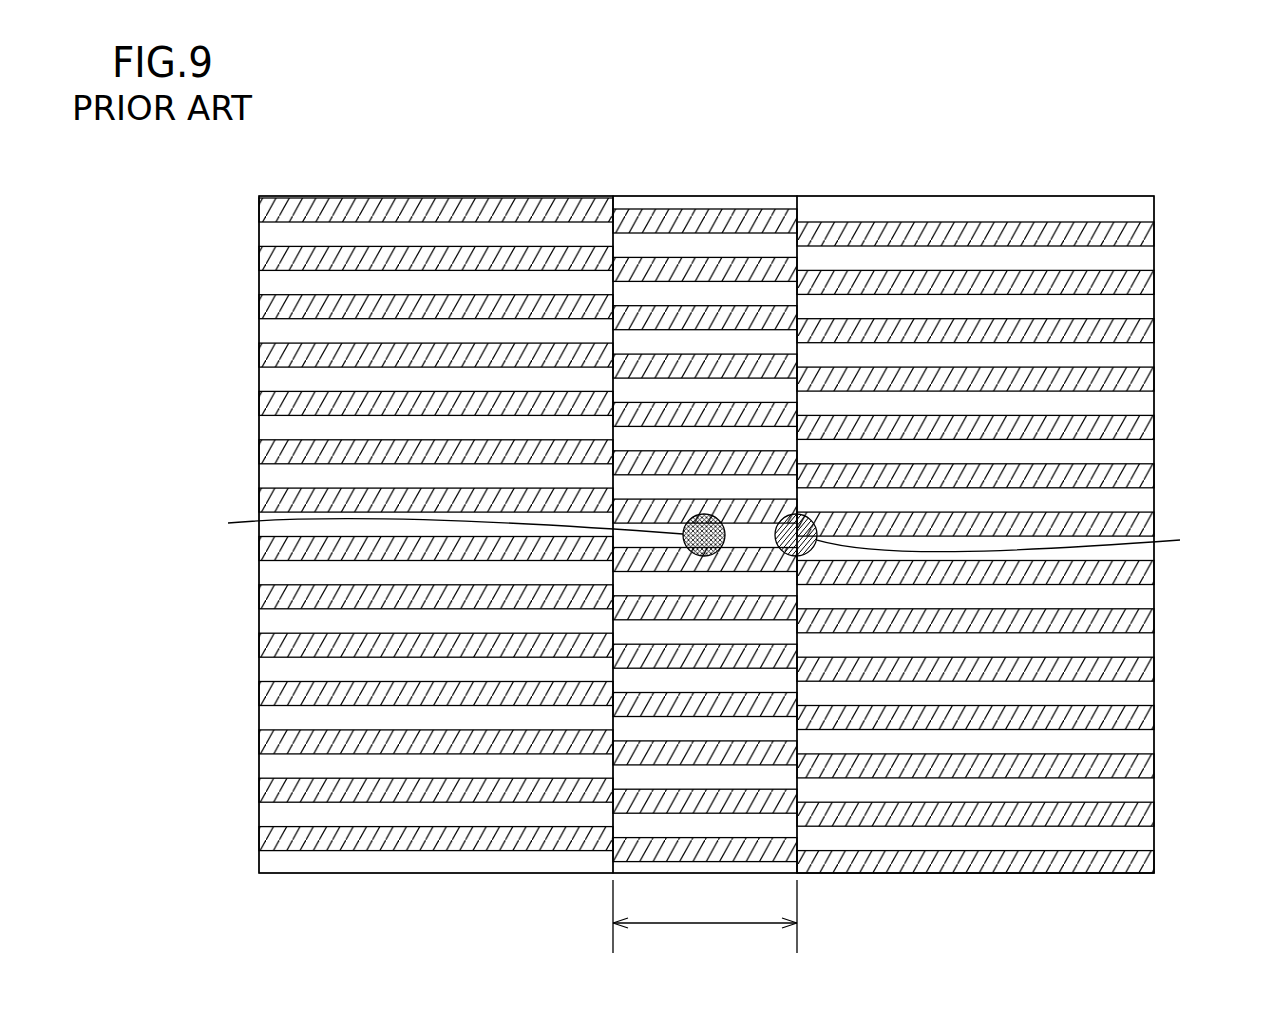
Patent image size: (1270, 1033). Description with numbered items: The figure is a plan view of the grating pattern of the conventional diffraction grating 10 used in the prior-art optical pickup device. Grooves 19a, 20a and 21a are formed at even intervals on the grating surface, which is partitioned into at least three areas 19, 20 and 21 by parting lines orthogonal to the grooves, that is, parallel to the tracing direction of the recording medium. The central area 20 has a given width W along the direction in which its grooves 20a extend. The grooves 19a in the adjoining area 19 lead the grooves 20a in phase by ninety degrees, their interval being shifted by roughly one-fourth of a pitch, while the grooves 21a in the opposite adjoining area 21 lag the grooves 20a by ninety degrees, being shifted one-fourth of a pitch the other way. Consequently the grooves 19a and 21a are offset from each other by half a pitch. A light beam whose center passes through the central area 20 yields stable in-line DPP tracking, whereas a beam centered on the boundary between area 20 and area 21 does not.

The diffraction grating 10 is at (1125, 158).
The area 19 is at (385, 507).
The grooves 19a is at (385, 256).
The central area 20 is at (699, 486).
The grooves 20a is at (797, 192).
The area 21 is at (1029, 507).
The grooves 21a is at (1029, 282).
The width W is at (705, 923).